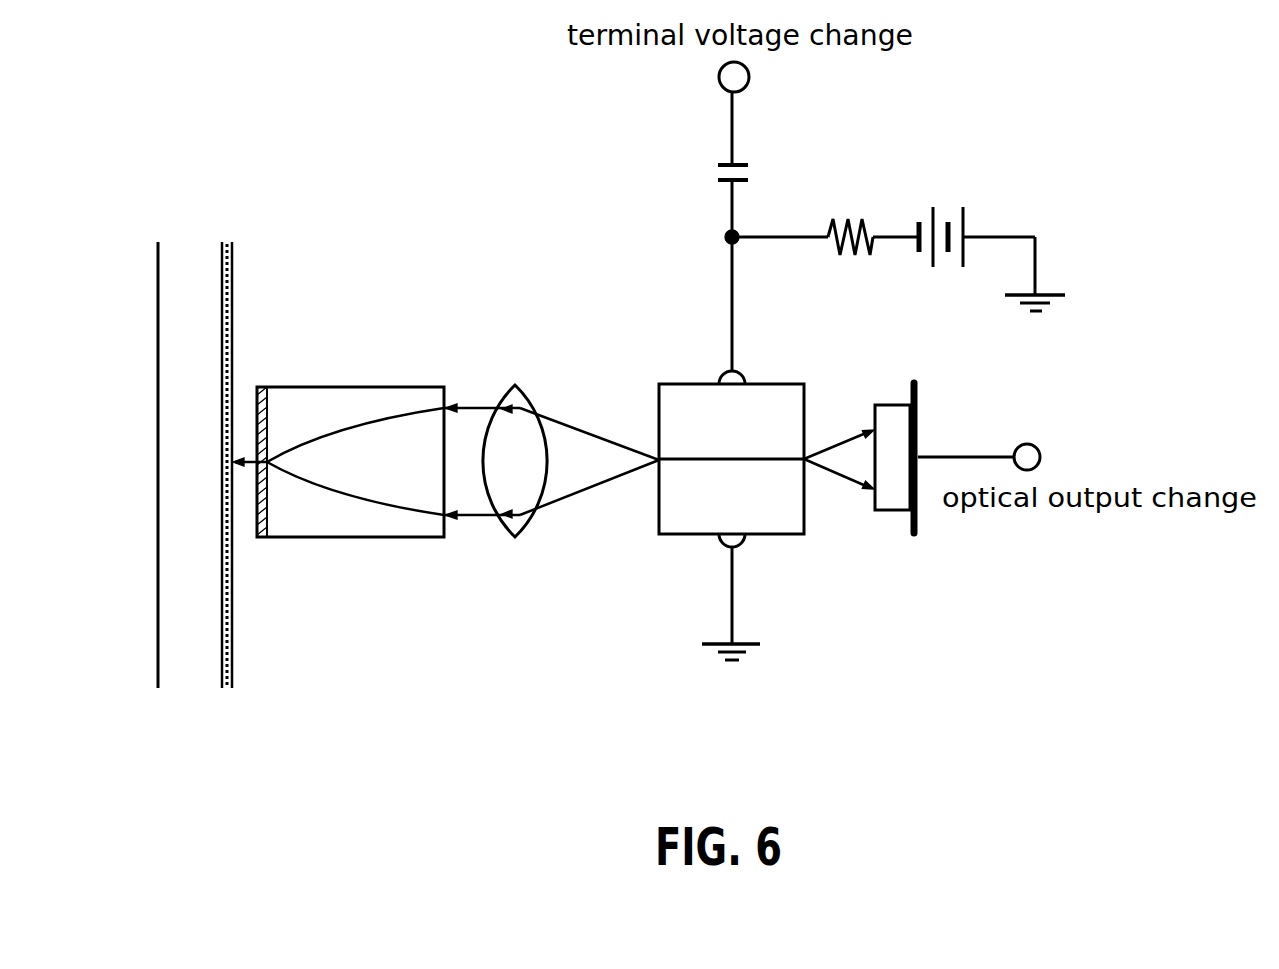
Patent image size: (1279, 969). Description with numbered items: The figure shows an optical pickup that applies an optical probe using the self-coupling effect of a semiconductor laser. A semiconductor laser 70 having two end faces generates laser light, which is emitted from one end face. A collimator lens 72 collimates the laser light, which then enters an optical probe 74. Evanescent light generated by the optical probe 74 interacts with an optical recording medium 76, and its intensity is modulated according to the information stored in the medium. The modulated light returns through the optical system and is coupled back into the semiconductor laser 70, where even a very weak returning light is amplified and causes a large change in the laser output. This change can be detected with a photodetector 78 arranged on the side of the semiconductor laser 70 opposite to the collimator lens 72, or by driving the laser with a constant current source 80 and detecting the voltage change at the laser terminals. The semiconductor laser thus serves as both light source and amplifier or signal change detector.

The semiconductor laser 70 is at (685, 513).
The collimator lens 72 is at (522, 528).
The optical probe 74 is at (368, 387).
The optical recording medium 76 is at (231, 289).
The photodetector 78 is at (897, 502).
The constant current source 80 is at (912, 211).